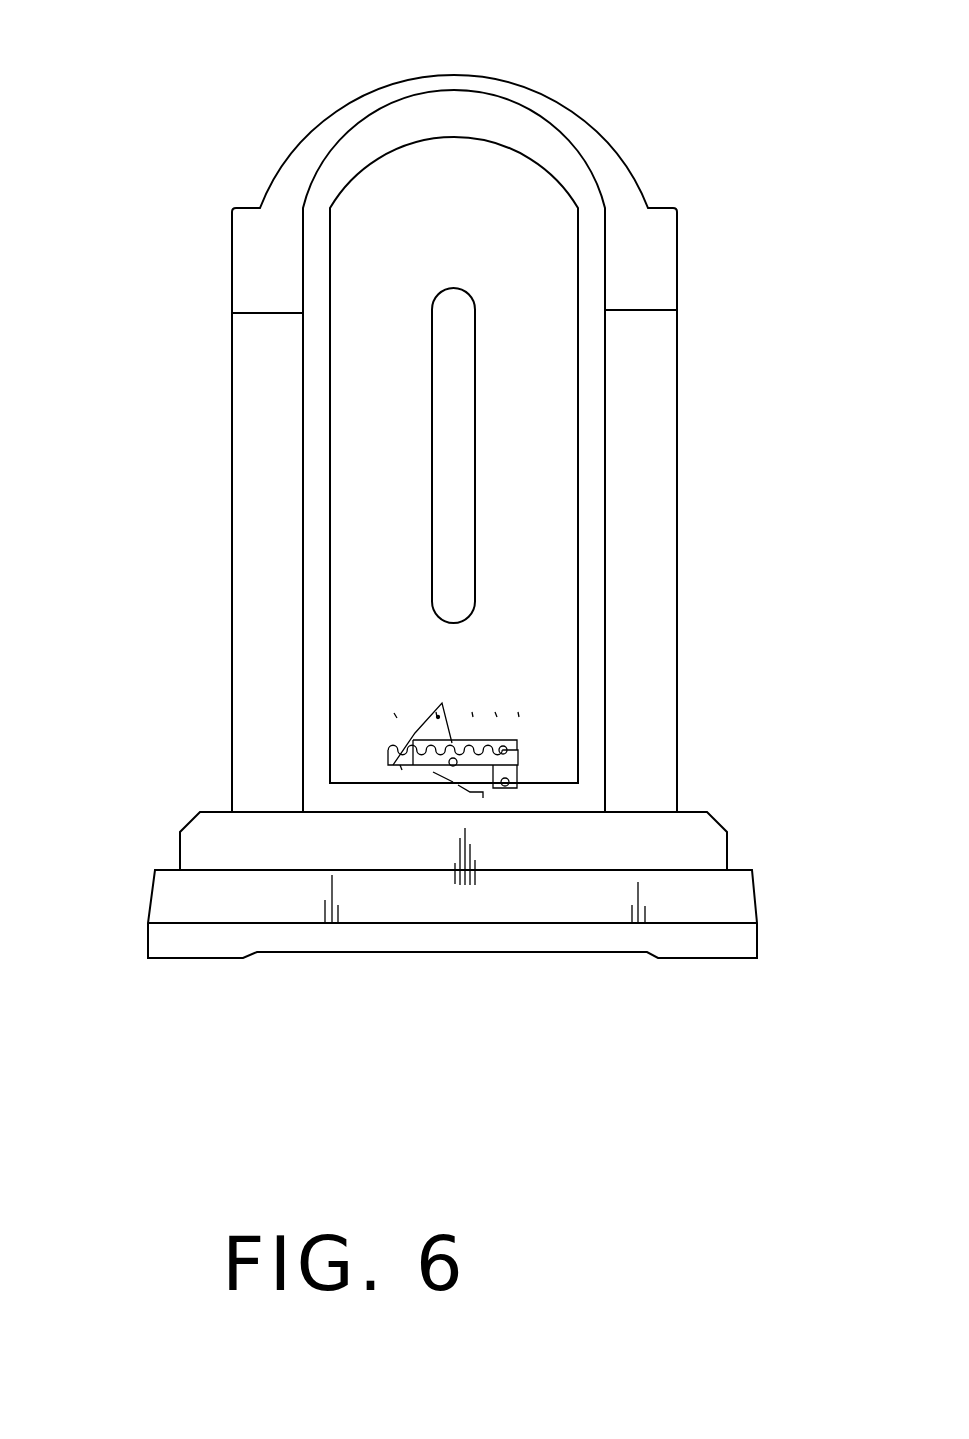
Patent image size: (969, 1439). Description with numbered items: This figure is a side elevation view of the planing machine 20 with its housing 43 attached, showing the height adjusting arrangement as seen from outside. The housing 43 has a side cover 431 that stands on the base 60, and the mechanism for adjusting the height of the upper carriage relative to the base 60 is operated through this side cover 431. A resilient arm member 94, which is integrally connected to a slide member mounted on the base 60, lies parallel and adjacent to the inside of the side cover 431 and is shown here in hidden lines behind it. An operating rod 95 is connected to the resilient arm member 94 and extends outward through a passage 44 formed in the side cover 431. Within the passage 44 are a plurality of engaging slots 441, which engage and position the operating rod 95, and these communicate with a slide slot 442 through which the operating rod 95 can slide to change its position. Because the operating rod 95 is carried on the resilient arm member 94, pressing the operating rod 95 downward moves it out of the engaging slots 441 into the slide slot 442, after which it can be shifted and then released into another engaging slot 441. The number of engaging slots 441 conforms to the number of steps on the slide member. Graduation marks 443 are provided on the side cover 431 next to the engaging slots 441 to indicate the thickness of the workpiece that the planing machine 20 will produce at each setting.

The planing machine 20 is at (295, 123).
The housing 43 is at (682, 238).
The side cover 431 is at (512, 168).
The passage 44 is at (385, 748).
The engaging slots 441 is at (442, 715).
The slide slot 442 is at (407, 765).
The graduation marks 443 is at (385, 718).
The base 60 is at (755, 870).
The resilient arm member 94 is at (483, 798).
The operating rod 95 is at (453, 766).